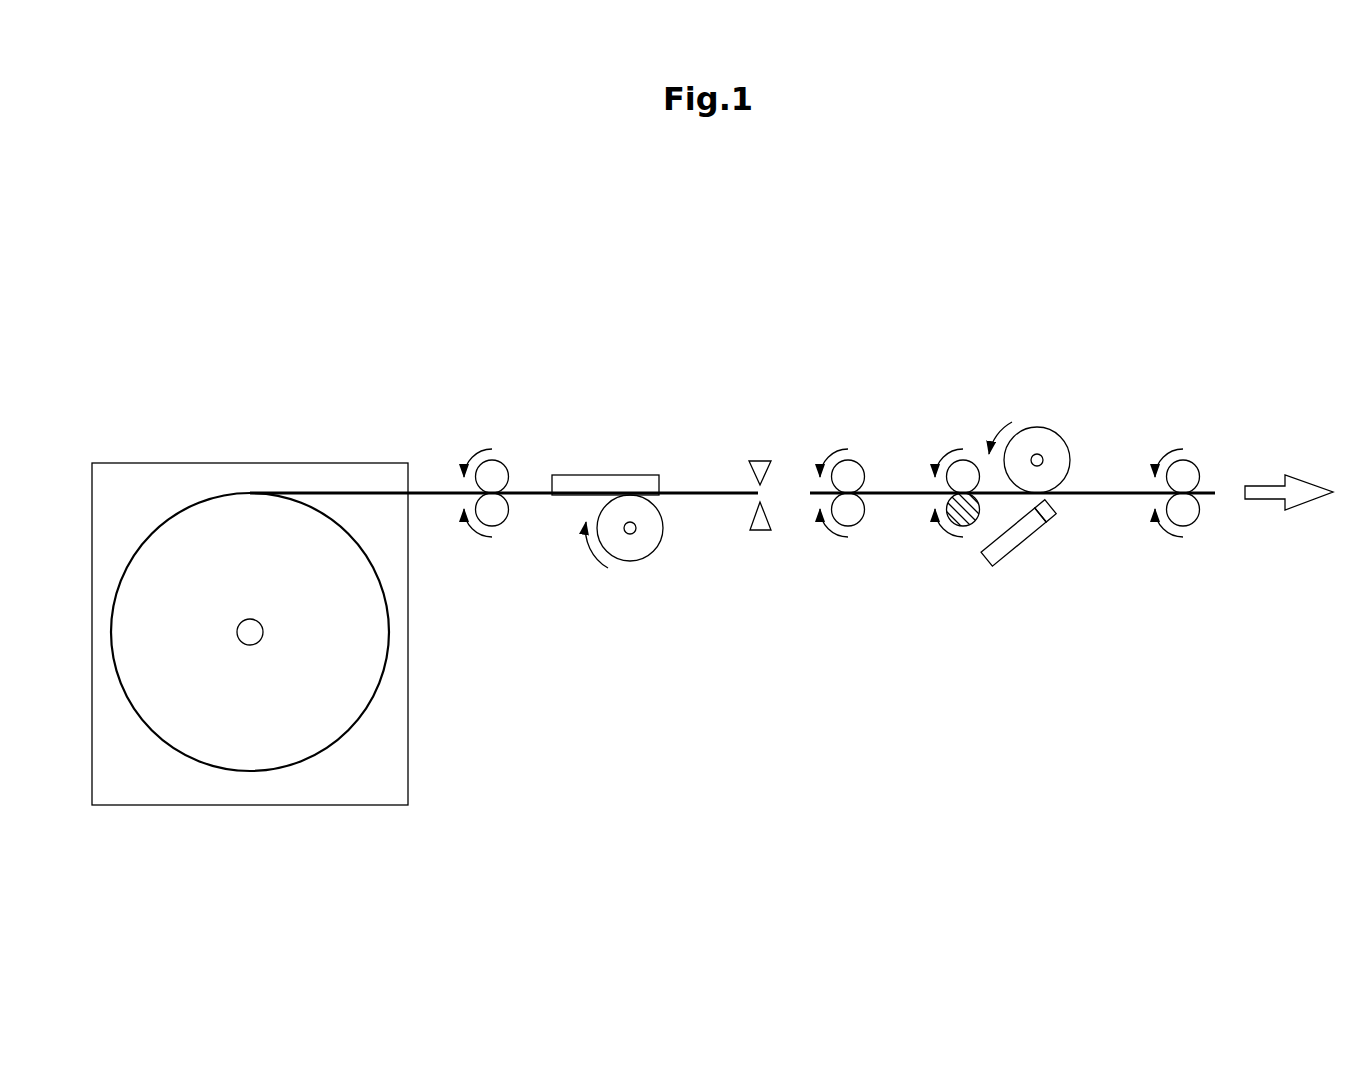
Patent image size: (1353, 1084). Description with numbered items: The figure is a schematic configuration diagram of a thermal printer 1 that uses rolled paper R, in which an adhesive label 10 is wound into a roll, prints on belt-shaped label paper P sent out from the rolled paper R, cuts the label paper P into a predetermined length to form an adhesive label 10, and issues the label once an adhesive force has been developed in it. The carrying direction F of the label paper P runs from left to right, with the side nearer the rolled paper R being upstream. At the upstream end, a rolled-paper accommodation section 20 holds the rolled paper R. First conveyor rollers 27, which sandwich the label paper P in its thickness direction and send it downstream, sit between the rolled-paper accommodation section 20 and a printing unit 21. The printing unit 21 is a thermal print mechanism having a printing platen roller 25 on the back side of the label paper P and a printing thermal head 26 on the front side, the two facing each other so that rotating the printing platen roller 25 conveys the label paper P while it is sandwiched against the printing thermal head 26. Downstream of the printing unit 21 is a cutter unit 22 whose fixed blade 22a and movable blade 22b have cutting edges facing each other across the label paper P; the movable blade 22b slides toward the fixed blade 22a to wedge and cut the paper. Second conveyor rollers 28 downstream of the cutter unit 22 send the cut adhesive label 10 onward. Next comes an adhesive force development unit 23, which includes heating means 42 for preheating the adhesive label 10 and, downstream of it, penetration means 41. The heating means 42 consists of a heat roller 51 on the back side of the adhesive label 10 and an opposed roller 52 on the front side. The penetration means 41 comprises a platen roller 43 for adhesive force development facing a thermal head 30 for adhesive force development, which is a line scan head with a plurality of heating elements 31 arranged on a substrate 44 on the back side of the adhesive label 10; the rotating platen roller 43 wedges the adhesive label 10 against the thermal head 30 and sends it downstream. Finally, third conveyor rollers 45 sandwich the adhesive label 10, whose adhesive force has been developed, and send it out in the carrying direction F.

The thermal printer 1 is at (815, 280).
The adhesive label 10 is at (1117, 490).
The rolled-paper accommodation section 20 is at (243, 461).
The printing unit 21 is at (630, 445).
The cutter unit 22 is at (722, 616).
The fixed blade 22a is at (760, 528).
The movable blade 22b is at (763, 470).
The adhesive force development unit 23 is at (1015, 393).
The printing platen roller 25 is at (630, 547).
The printing thermal head 26 is at (575, 485).
The first conveyor rollers 27 is at (500, 518).
The second conveyor rollers 28 is at (855, 517).
The thermal head for adhesive force development 30 is at (1028, 552).
The heating elements 31 is at (1042, 502).
The penetration means 41 is at (1078, 430).
The heating means 42 is at (932, 463).
The platen roller for adhesive force development 43 is at (1043, 440).
The substrate 44 is at (1003, 547).
The third conveyor rollers 45 is at (1195, 512).
The heat roller 51 is at (970, 515).
The opposed roller 52 is at (972, 468).
The label paper P is at (442, 493).
The rolled paper R is at (200, 768).
The carrying direction F is at (1262, 485).